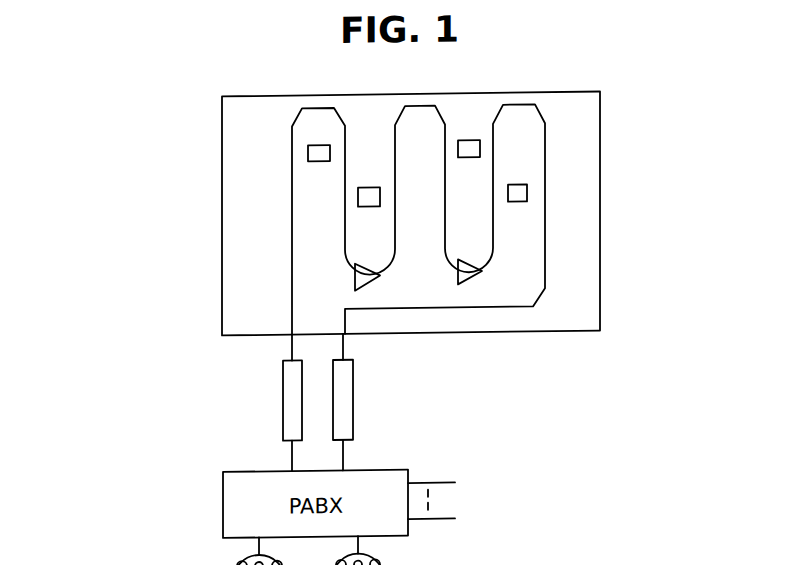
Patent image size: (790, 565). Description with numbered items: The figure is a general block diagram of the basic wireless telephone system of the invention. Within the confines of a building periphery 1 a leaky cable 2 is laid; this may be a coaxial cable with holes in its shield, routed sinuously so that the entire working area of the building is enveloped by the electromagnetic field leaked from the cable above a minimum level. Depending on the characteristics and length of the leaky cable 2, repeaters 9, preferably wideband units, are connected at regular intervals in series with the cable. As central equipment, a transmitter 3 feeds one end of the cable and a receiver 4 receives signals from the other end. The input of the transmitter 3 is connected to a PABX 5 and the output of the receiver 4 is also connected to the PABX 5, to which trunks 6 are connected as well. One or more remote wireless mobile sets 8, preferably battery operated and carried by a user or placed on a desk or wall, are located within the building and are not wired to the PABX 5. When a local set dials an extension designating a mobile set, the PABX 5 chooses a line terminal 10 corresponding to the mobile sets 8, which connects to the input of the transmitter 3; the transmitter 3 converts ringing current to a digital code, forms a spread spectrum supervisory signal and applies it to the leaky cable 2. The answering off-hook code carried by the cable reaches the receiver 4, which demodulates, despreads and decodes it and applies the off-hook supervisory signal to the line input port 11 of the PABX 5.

The building periphery 1 is at (600, 186).
The leaky cable 2 is at (292, 165).
The transmitter 3 is at (290, 415).
The receiver 4 is at (353, 385).
The PABX 5 is at (412, 481).
The trunks 6 is at (440, 484).
The mobile sets 8 is at (367, 187).
The repeaters 9 is at (466, 264).
The line terminal 10 is at (290, 466).
The line input port 11 is at (345, 469).